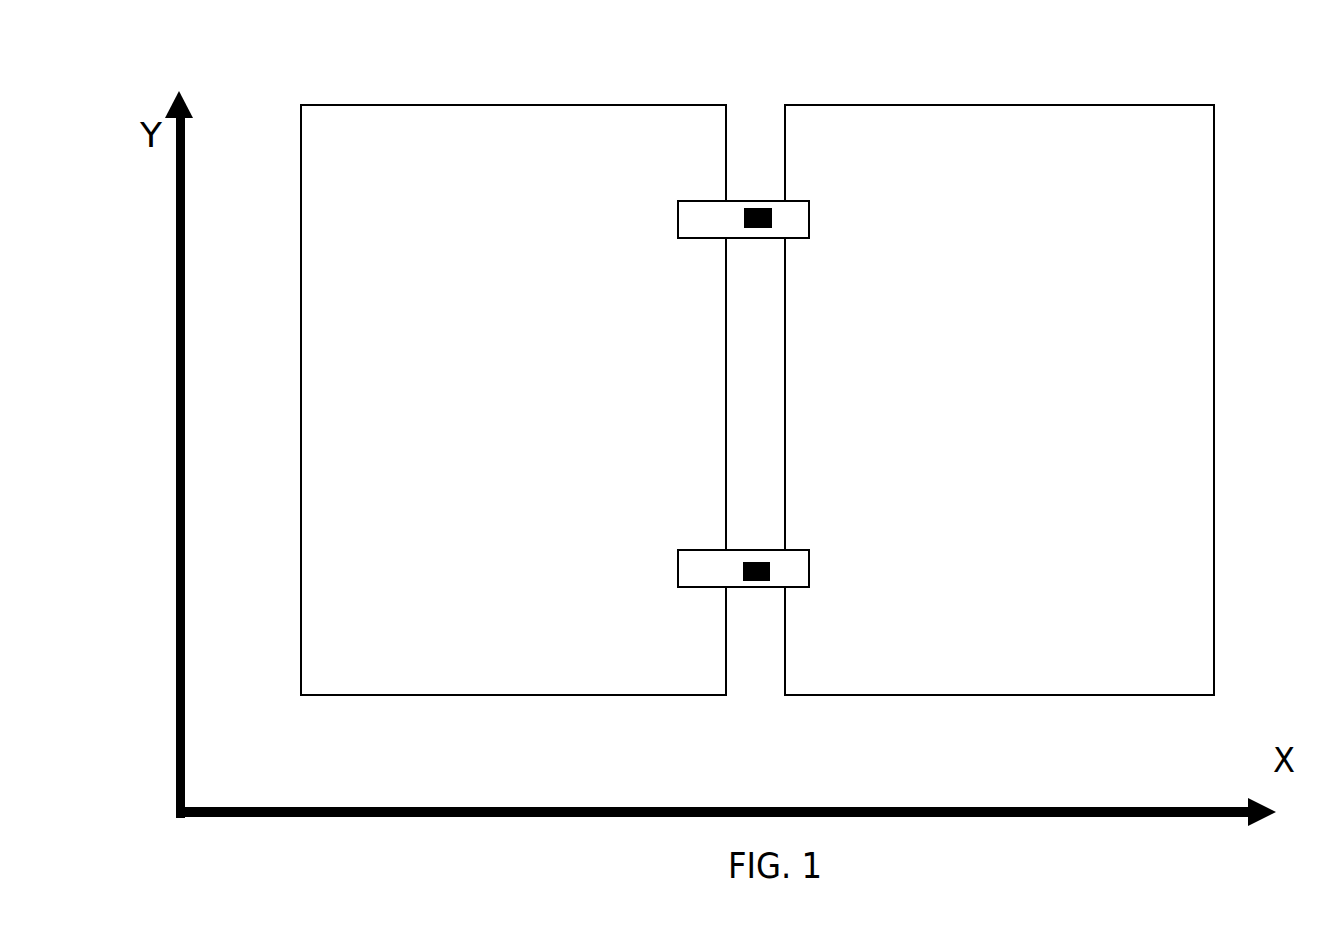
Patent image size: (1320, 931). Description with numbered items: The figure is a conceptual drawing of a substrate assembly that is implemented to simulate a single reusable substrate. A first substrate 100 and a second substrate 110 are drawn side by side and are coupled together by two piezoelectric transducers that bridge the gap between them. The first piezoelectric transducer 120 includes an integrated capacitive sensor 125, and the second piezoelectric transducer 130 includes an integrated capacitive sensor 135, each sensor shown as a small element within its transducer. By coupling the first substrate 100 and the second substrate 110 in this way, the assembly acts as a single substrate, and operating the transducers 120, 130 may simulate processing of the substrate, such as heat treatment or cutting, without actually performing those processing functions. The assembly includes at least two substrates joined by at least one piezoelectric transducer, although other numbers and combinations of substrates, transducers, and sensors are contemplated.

The first substrate 100 is at (560, 695).
The second substrate 110 is at (1042, 697).
The first piezoelectric transducer 120 is at (677, 227).
The integrated capacitive sensor 125 is at (763, 206).
The second piezoelectric transducer 130 is at (810, 587).
The integrated capacitive sensor 135 is at (762, 582).